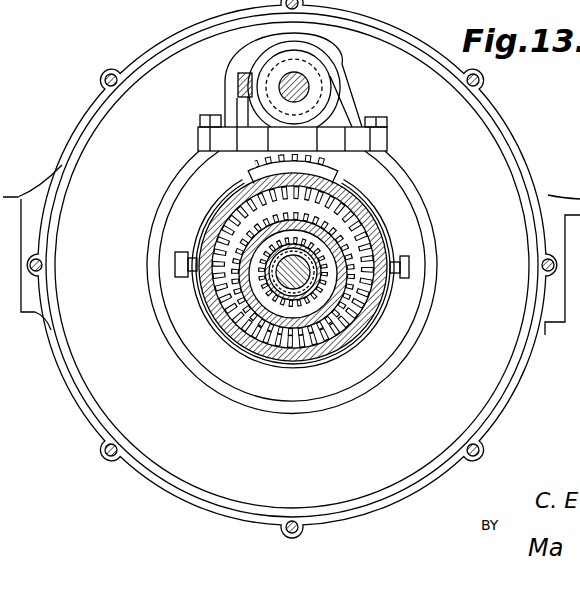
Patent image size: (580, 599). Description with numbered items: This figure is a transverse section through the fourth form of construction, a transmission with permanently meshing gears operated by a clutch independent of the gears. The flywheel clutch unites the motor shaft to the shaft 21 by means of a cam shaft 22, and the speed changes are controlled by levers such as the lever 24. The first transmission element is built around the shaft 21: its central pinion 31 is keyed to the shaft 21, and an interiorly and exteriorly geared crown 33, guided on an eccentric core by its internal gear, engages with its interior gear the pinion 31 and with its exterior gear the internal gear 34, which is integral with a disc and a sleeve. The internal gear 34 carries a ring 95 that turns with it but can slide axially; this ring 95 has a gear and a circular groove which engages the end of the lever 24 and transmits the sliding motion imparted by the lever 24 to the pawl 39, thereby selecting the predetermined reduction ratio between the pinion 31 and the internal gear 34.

The lever 24 is at (252, 107).
The cam shaft 22 is at (300, 85).
The pawl 39 is at (306, 157).
The crown 33 is at (242, 329).
The internal gear 34 is at (224, 298).
The central pinion 31 is at (304, 297).
The shaft 21 is at (293, 272).
The ring 95 is at (362, 322).